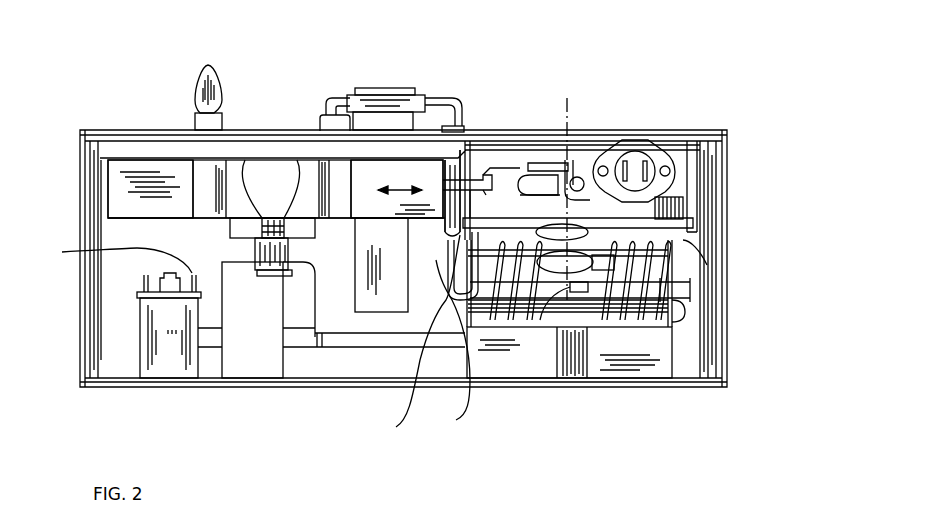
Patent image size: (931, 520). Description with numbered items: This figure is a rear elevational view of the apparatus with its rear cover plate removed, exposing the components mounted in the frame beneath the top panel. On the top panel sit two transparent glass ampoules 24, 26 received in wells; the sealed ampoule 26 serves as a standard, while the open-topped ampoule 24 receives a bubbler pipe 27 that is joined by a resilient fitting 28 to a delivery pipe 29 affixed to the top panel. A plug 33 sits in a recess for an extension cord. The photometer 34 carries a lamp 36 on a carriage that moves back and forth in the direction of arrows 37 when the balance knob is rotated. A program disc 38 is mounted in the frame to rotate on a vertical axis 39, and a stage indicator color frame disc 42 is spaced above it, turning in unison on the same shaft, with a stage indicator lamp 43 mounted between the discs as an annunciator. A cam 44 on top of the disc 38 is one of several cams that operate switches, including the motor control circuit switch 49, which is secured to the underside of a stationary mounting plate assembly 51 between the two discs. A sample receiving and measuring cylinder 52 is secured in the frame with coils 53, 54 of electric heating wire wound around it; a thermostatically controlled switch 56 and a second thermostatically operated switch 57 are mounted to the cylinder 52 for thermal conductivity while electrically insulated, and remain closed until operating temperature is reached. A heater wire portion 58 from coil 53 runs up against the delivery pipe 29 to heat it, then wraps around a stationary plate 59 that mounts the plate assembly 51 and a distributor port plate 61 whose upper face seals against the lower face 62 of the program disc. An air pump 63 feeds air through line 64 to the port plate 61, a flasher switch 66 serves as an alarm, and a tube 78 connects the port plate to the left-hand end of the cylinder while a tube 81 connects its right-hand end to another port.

The ampoule 24 is at (322, 124).
The ampoule 26 is at (198, 125).
The bubbler pipe 27 is at (330, 100).
The resilient fitting 28 is at (418, 93).
The delivery pipe 29 is at (436, 98).
The plug 33 is at (658, 150).
The photometer 34 is at (118, 183).
The lamp 36 is at (265, 175).
The arrows 37 is at (400, 188).
The program disc 38 is at (683, 208).
The vertical axis 39 is at (572, 110).
The stage indicator color frame disc 42 is at (540, 182).
The stage indicator lamp 43 is at (560, 178).
The cam 44 is at (520, 170).
The motor control circuit switch 49 is at (448, 240).
The stationary mounting plate assembly 51 is at (486, 186).
The sample receiving and measuring cylinder 52 is at (604, 330).
The coil 53 is at (556, 266).
The coil 54 is at (660, 292).
The thermostatically controlled switch 56 is at (548, 300).
The second thermostatically operated switch 57 is at (610, 235).
The heater wire portion 58 is at (451, 347).
The stationary plate 59 is at (707, 265).
The distributor port plate 61 is at (447, 278).
The lower face 62 is at (683, 233).
The air pump 63 is at (110, 259).
The line 64 is at (328, 348).
The flasher switch 66 is at (158, 368).
The tube 78 is at (687, 308).
The tube 81 is at (416, 334).